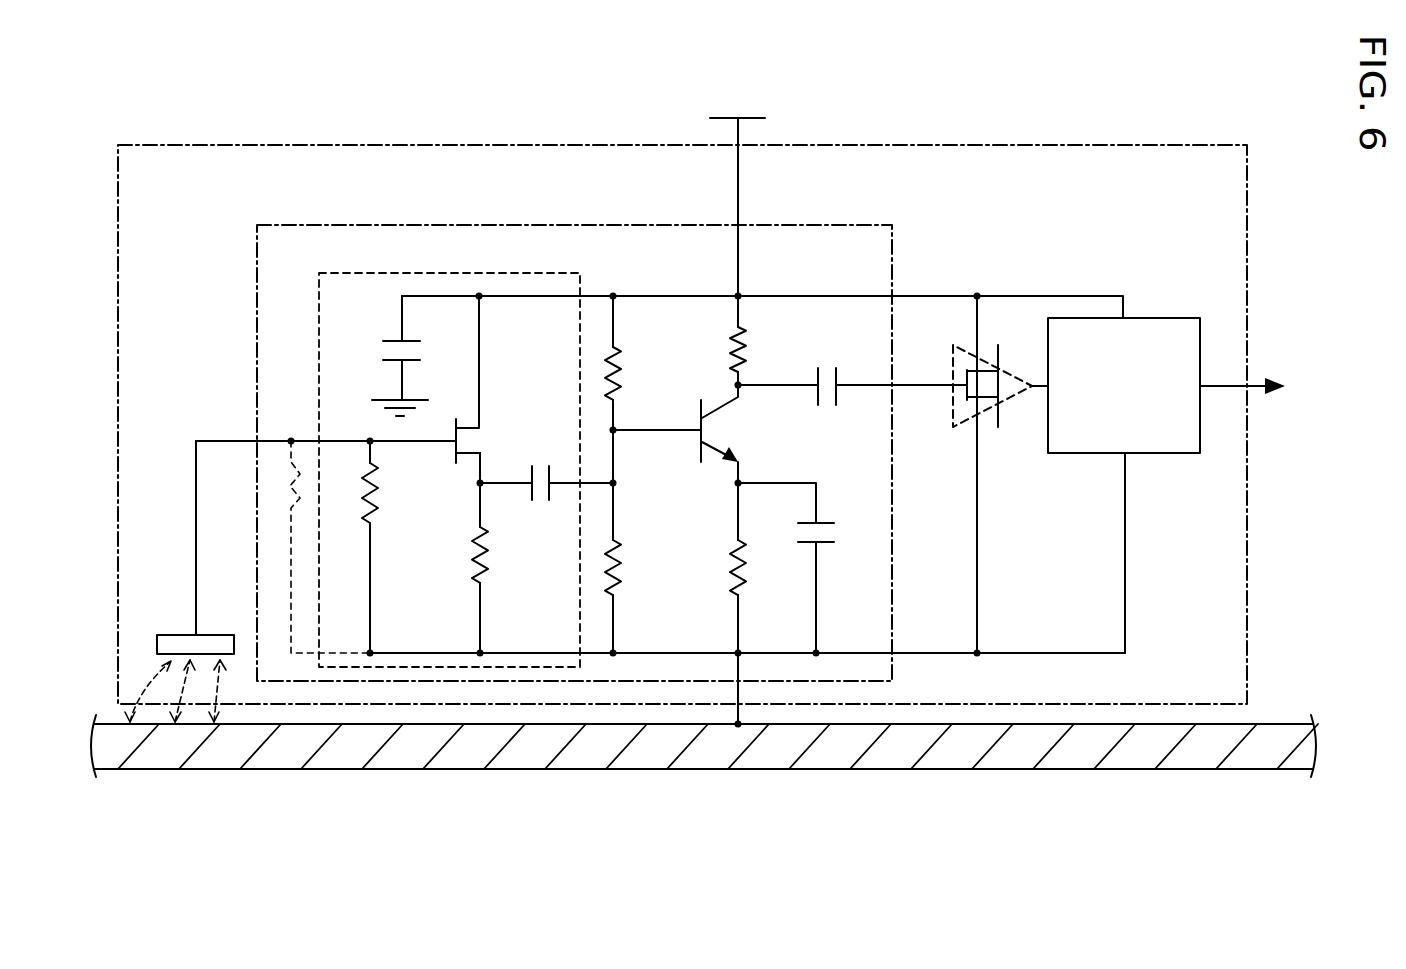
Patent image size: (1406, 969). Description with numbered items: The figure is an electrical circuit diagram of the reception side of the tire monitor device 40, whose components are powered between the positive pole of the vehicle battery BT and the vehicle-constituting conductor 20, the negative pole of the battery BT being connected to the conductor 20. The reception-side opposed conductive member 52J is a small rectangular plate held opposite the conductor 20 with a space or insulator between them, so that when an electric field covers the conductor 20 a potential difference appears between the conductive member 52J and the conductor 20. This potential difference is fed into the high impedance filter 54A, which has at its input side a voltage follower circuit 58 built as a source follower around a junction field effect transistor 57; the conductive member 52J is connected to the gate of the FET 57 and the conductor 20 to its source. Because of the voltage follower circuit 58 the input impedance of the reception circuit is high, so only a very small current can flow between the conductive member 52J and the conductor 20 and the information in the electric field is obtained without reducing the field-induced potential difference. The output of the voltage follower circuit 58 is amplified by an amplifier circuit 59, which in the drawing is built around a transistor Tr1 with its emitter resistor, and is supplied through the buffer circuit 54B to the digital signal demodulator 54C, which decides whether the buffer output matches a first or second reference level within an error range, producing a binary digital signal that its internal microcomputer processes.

The tire monitor device 40 is at (186, 140).
The vehicle-constituting conductor 20 is at (350, 755).
The reception-side opposed conductive member 52J is at (160, 635).
The high impedance filter 54A is at (366, 225).
The voltage follower circuit 58 is at (527, 668).
The junction field effect transistor 57 is at (493, 440).
The transistor Tr1 is at (716, 466).
The amplifier circuit 59 is at (752, 562).
The battery BT is at (766, 102).
The buffer circuit 54B is at (1023, 380).
The digital signal demodulator 54C is at (1167, 318).